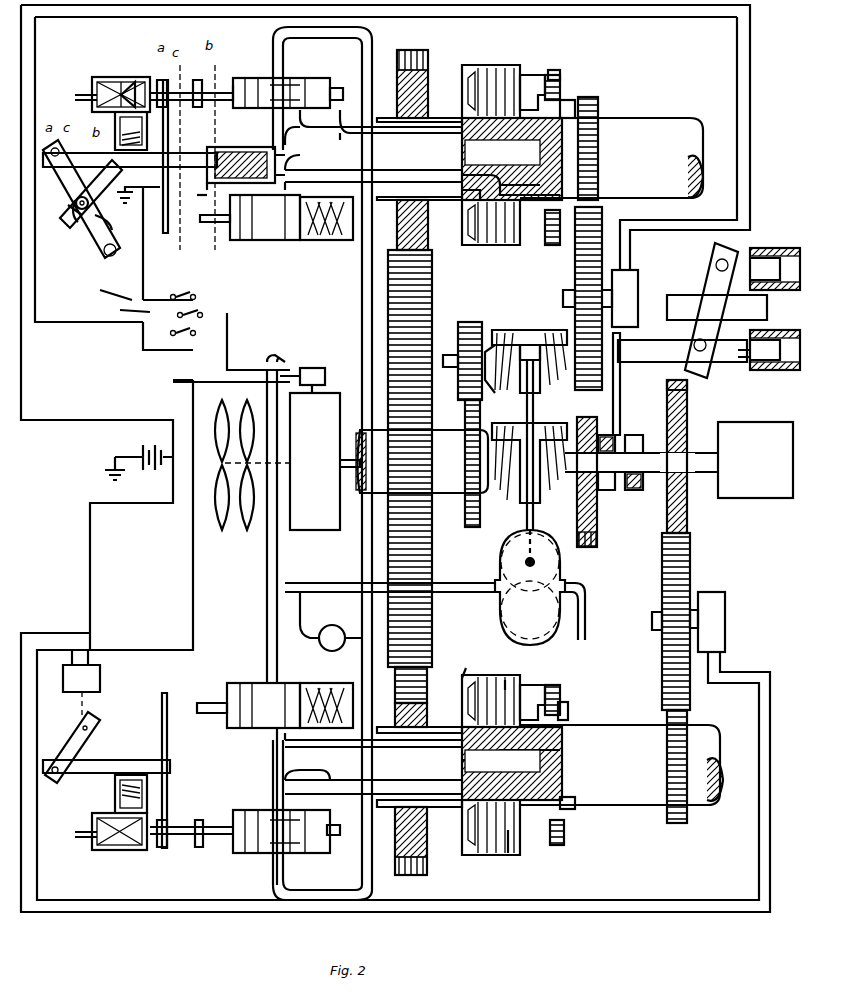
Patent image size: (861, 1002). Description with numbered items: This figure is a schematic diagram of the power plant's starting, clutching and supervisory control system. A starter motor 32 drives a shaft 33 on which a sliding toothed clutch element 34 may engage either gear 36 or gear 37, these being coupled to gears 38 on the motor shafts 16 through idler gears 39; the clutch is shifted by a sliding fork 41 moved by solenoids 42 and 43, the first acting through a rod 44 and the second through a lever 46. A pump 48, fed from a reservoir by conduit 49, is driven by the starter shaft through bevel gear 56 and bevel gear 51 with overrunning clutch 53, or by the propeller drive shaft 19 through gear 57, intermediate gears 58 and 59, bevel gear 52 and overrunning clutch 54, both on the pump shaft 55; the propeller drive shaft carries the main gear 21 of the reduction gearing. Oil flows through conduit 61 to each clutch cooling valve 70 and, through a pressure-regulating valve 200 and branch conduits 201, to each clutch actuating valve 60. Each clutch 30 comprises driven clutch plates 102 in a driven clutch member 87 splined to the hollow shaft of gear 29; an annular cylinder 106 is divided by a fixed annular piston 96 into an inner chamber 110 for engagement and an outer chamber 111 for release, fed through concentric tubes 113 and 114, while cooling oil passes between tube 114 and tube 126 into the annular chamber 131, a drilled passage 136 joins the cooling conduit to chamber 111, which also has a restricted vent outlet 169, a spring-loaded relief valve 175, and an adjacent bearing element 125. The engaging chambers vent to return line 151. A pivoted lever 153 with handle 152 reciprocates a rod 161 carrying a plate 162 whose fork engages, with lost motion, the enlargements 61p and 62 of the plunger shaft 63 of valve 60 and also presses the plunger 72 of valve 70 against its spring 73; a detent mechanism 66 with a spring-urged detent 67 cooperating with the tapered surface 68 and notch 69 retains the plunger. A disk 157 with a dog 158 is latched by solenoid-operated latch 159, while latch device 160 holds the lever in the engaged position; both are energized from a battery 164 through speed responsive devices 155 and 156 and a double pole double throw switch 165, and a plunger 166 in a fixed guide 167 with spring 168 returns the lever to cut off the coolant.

The motor shaft 16 is at (662, 130).
The propeller drive shaft 19 is at (365, 493).
The main gear 21 is at (432, 575).
The gear 29 is at (428, 62).
The clutch 30 is at (490, 65).
The starter motor 32 is at (770, 498).
The starter shaft 33 is at (697, 452).
The sliding toothed clutch element 34 is at (620, 432).
The gear 36 is at (688, 518).
The gear 37 is at (597, 520).
The gear 38 is at (598, 110).
The idler gear 39 is at (603, 222).
The sliding fork 41 is at (622, 390).
The solenoid 42 is at (770, 372).
The solenoid 43 is at (770, 248).
The rod 44 is at (637, 348).
The lever 46 is at (713, 290).
The pump 48 is at (565, 578).
The conduit 49 is at (586, 630).
The bevel gear 51 is at (540, 423).
The bevel gear 52 is at (518, 330).
The overrunning clutch 53 is at (527, 468).
The overrunning clutch 54 is at (540, 352).
The pump shaft 55 is at (528, 558).
The bevel gear 56 is at (538, 540).
The gear 57 is at (468, 505).
The intermediate gear 58 is at (470, 322).
The intermediate gear 59 is at (492, 395).
The clutch actuating valve 60 is at (256, 78).
The conduit 61 is at (278, 312).
The enlargement 61p is at (160, 78).
The enlargement 62 is at (197, 78).
The plunger shaft 63 is at (233, 78).
The detent mechanism 66 is at (100, 77).
The spring-urged detent 67 is at (115, 122).
The tapered surface 68 is at (75, 97).
The notch 69 is at (130, 77).
The clutch cooling valve 70 is at (250, 242).
The plunger 72 is at (220, 224).
The spring 73 is at (326, 241).
The driven clutch member 87 is at (468, 680).
The annular piston 96 is at (505, 855).
The driven clutch plate 102 is at (505, 682).
The annular cylinder 106 is at (548, 242).
The inner chamber 110 is at (530, 78).
The outer chamber 111 is at (574, 100).
The tube 113 is at (420, 170).
The tube 114 is at (340, 130).
The bearing 125 is at (555, 75).
The tube 126 is at (470, 180).
The annular chamber 131 is at (470, 203).
The drilled passage 136 is at (565, 165).
The return line 151 is at (335, 88).
The handle 152 is at (110, 258).
The pivoted lever 153 is at (95, 242).
The speed responsive device 155 is at (638, 290).
The speed responsive device 156 is at (312, 368).
The disk 157 is at (68, 215).
The dog 158 is at (132, 190).
The solenoid-operated latch 159 is at (83, 212).
The solenoid-operated latch device 160 is at (115, 233).
The rod 161 is at (170, 153).
The plate 162 is at (168, 237).
The battery 164 is at (141, 452).
The double pole double throw switch 165 is at (196, 325).
The plunger 166 is at (208, 195).
The fixed guide 167 is at (266, 163).
The spring 168 is at (255, 147).
The restricted vent outlet 169 is at (568, 712).
The spring-loaded relief valve 175 is at (560, 70).
The pressure-regulating valve 200 is at (330, 651).
The branch conduit 201 is at (373, 48).